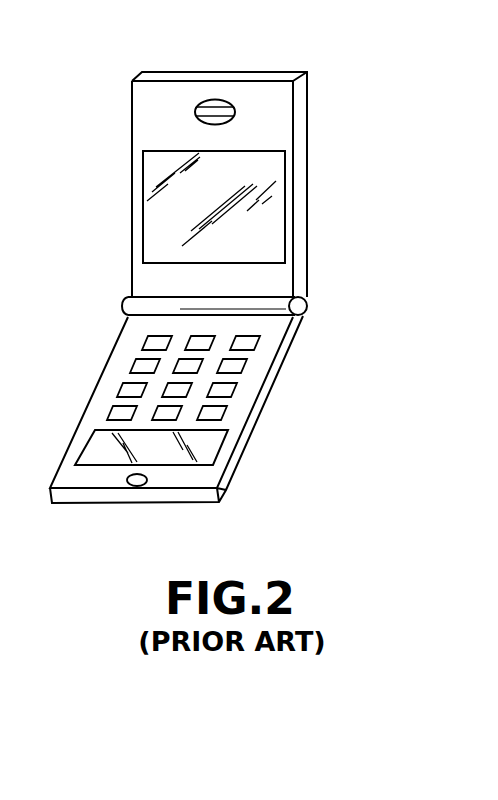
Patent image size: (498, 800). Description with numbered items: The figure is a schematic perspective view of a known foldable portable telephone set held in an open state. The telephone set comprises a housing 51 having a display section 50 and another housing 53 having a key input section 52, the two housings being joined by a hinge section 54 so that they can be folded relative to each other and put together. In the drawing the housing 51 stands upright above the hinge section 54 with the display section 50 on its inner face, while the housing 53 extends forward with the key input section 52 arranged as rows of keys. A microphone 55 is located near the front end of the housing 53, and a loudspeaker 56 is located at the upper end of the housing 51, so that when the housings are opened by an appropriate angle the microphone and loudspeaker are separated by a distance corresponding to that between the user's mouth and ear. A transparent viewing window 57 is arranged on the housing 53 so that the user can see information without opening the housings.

The display section 50 is at (267, 195).
The housing 51 is at (184, 75).
The key input section 52 is at (240, 363).
The housing 53 is at (93, 498).
The hinge section 54 is at (307, 304).
The microphone 55 is at (147, 478).
The speaker 56 is at (234, 108).
The transparent viewing window 57 is at (203, 443).